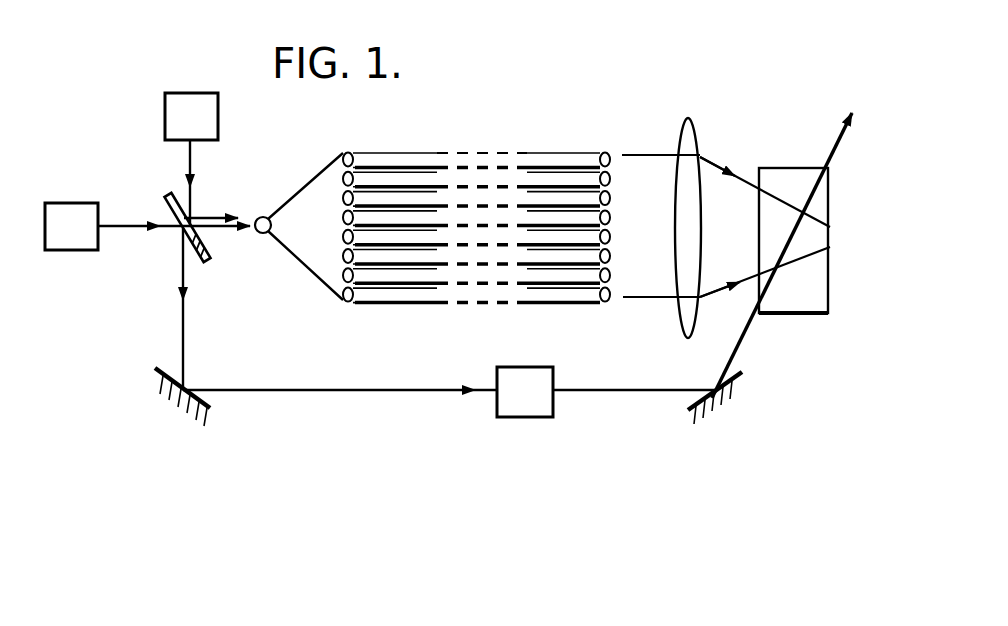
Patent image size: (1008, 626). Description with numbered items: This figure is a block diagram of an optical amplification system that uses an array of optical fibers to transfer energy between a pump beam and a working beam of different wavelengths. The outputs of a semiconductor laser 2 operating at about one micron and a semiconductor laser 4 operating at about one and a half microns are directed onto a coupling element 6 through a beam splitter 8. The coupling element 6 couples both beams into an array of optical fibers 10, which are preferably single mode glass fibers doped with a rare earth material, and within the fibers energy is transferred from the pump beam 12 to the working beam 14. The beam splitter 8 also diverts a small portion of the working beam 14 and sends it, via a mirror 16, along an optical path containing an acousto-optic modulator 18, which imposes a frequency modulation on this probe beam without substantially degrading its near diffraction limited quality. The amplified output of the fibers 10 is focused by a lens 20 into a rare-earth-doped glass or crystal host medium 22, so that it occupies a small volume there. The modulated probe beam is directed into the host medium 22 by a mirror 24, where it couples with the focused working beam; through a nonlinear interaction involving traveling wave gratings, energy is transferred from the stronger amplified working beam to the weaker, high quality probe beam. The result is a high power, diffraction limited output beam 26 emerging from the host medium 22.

The 0.98 micron semiconductor laser 2 is at (165, 113).
The 1.55 micron semiconductor laser 4 is at (92, 203).
The coupling element 6 is at (263, 233).
The beam splitter 8 is at (205, 240).
The array of optical fibers 10 is at (484, 134).
The pump beam 12 is at (188, 159).
The working beam 14 is at (117, 223).
The mirror 16 is at (157, 370).
The acousto-optic modulator 18 is at (498, 409).
The lens 20 is at (680, 141).
The host medium 22 is at (780, 302).
The mirror 24 is at (737, 372).
The output beam 26 is at (842, 130).